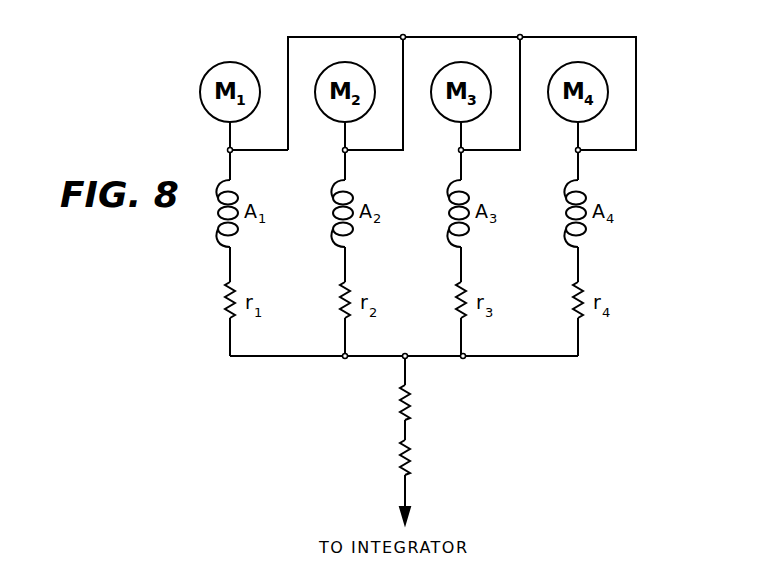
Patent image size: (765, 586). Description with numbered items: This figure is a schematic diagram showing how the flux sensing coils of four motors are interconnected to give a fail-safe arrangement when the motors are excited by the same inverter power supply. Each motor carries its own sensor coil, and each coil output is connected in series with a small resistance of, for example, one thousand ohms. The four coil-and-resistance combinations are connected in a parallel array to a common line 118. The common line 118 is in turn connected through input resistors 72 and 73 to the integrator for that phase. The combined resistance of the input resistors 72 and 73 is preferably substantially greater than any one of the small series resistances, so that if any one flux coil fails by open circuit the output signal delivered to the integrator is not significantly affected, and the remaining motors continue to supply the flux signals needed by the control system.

The common line 118 is at (305, 358).
The input resistor 72 is at (412, 408).
The input resistor 73 is at (412, 460).